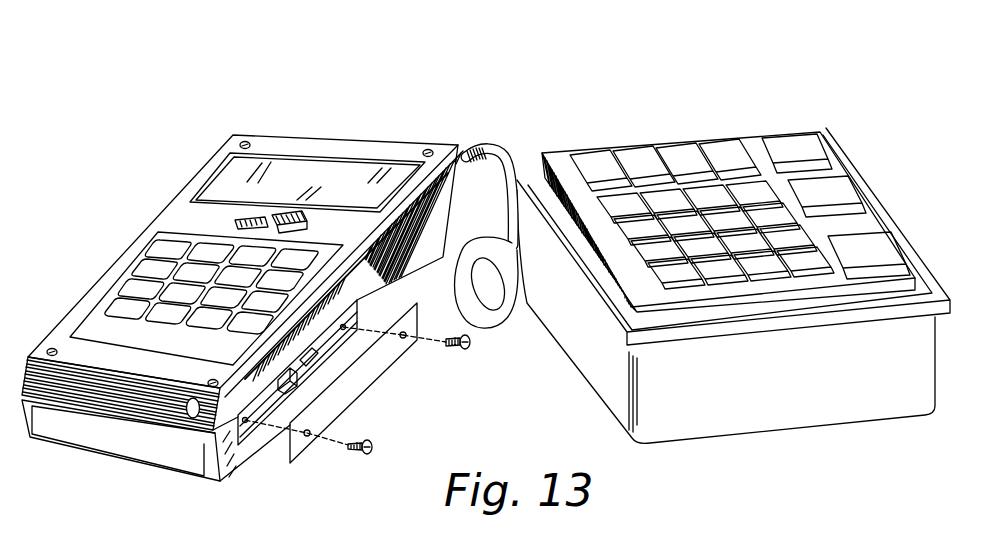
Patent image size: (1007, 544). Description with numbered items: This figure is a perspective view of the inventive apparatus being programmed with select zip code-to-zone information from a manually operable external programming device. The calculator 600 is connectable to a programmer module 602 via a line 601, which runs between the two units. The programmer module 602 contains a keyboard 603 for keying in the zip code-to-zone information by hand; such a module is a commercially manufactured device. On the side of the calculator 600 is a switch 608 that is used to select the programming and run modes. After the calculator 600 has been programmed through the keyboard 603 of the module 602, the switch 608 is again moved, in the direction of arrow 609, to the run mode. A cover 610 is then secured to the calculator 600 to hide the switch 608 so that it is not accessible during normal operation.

The calculator 600 is at (163, 240).
The line 601 is at (500, 147).
The programmer module 602 is at (822, 418).
The keyboard 603 is at (754, 190).
The switch 608 is at (277, 394).
The arrow 609 is at (327, 358).
The cover 610 is at (397, 362).